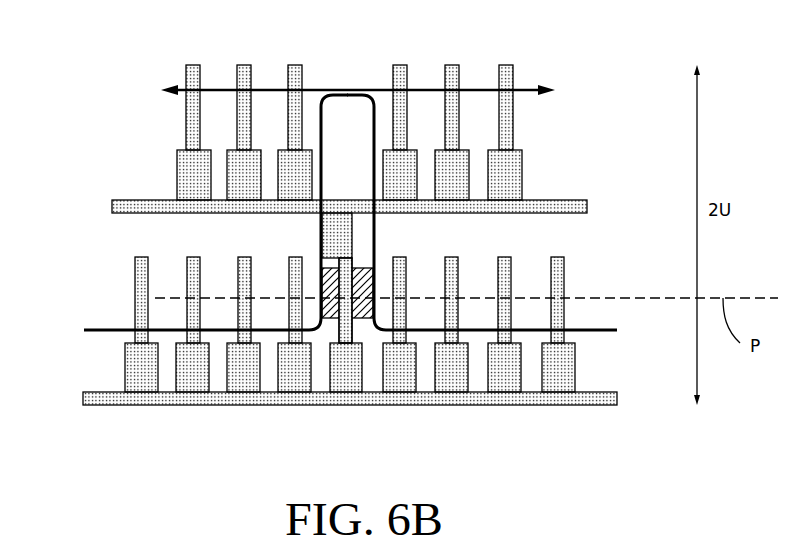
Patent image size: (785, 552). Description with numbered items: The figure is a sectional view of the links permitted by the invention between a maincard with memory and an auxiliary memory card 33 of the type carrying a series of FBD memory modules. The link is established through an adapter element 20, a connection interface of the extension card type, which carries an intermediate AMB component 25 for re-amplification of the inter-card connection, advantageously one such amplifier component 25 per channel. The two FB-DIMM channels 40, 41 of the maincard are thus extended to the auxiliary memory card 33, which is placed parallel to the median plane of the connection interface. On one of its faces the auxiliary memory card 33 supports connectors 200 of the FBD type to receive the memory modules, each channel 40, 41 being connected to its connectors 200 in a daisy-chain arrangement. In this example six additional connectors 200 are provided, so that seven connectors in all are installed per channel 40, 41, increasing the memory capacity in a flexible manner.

The adapter element 20 is at (358, 332).
The intermediate AMB component 25 is at (362, 268).
The auxiliary memory card 33 is at (353, 198).
The FB-DIMM channel 40 is at (598, 333).
The FB-DIMM channel 41 is at (113, 328).
The connector 200 is at (297, 359).